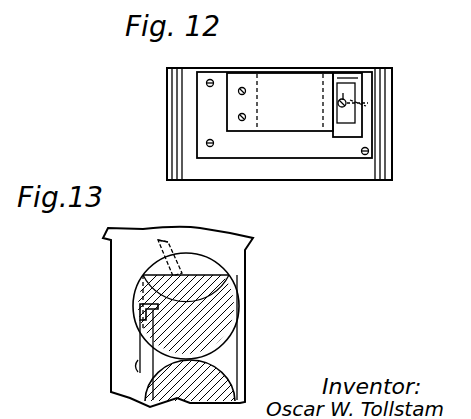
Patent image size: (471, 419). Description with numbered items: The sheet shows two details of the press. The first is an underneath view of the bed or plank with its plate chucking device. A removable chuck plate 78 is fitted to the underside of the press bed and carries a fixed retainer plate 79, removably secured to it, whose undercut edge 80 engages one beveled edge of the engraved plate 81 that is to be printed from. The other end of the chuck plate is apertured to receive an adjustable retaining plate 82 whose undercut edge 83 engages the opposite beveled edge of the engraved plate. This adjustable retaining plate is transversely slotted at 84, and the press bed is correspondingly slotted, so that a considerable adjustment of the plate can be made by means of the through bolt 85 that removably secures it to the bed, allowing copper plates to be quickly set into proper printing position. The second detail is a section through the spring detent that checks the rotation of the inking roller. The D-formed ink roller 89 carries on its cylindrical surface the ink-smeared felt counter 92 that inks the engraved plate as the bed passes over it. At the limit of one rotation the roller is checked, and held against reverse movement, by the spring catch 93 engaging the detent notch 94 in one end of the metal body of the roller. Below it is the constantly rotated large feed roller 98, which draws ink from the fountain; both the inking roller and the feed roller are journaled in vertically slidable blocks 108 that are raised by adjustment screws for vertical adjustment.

In FIG. 12, the chuck plate 78 is at (307, 150).
In FIG. 12, the fixed retainer plate 79 is at (245, 72).
In FIG. 12, the undercut edge 80 is at (260, 72).
In FIG. 12, the engraved plate 81 is at (343, 78).
In FIG. 12, the adjustable retaining plate 82 is at (353, 83).
In FIG. 12, the undercut edge 83 is at (345, 70).
In FIG. 12, the transverse slot 84 is at (345, 106).
In FIG. 12, the through bolt 85 is at (343, 100).
In FIG. 13, the D-formed ink roller 89 is at (230, 287).
In FIG. 13, the felt counter 92 is at (215, 357).
In FIG. 13, the spring catch 93 is at (140, 312).
In FIG. 13, the detent notch 94 is at (160, 297).
In FIG. 13, the large feed roller 98 is at (233, 383).
In FIG. 13, the vertically slidable blocks 108 is at (228, 358).